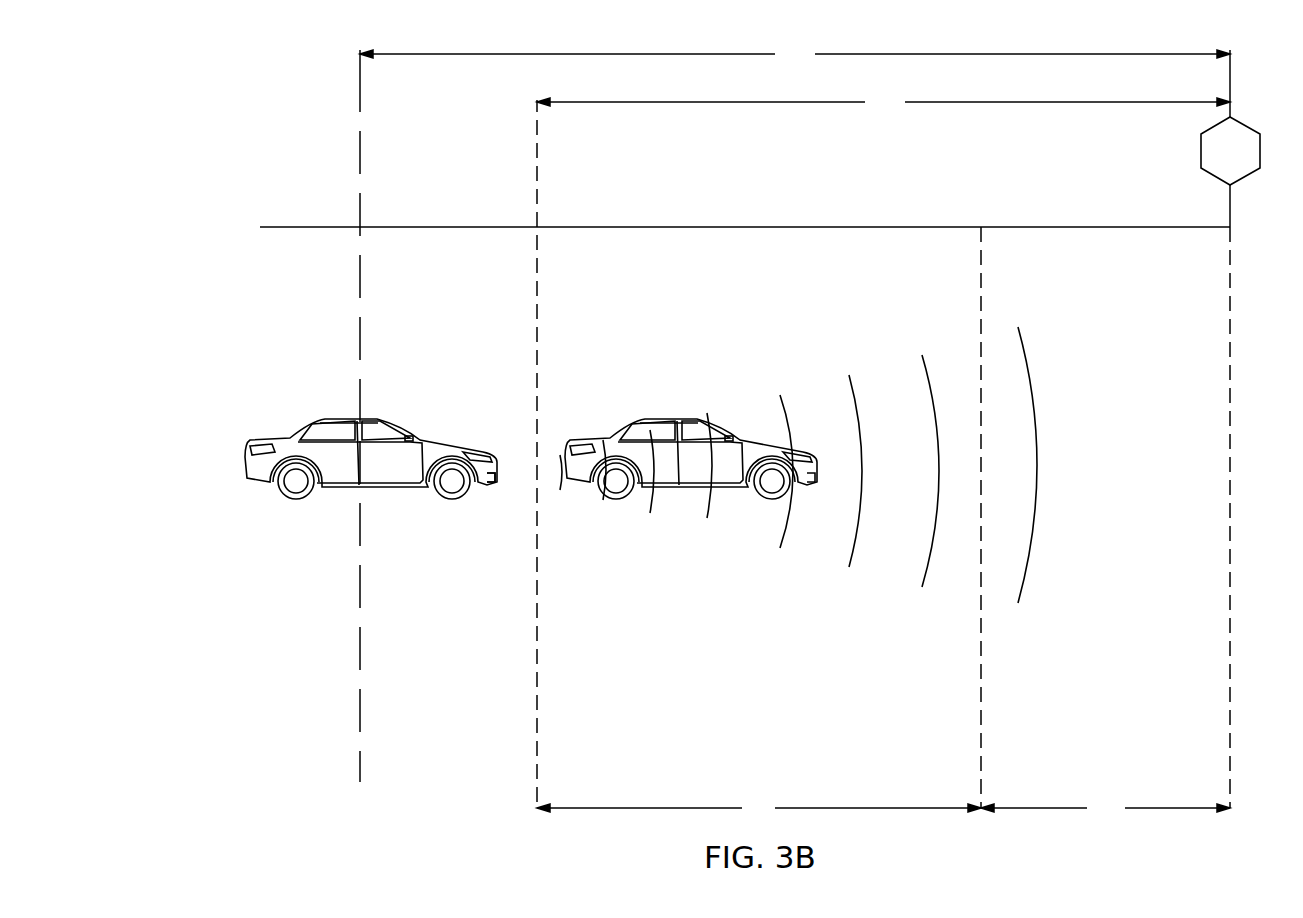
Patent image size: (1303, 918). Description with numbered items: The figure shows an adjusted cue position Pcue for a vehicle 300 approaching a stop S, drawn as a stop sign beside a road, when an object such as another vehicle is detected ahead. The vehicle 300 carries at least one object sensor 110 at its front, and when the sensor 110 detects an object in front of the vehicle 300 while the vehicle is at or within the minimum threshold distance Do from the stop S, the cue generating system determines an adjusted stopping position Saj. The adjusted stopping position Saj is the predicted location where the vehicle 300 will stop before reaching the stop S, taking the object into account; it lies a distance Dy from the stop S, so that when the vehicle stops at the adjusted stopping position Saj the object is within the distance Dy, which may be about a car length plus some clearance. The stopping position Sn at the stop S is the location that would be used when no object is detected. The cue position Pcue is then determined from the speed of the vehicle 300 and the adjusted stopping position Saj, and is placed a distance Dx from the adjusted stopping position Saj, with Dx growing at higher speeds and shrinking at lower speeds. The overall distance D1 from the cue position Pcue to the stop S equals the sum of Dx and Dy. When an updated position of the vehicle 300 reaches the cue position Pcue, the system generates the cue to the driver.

The vehicle 300 is at (243, 454).
The object sensor 110 is at (498, 468).
The stop S is at (1231, 227).
The stopping position Sn is at (1231, 650).
The adjusted stopping position Saj is at (981, 650).
The adjusted cue position Pcue is at (537, 650).
The minimum threshold distance Do is at (795, 58).
The distance from cue position to stop D1 is at (883, 104).
The distance from cue position to adjusted stopping position Dx is at (759, 811).
The distance from adjusted stopping position to stop Dy is at (1105, 811).